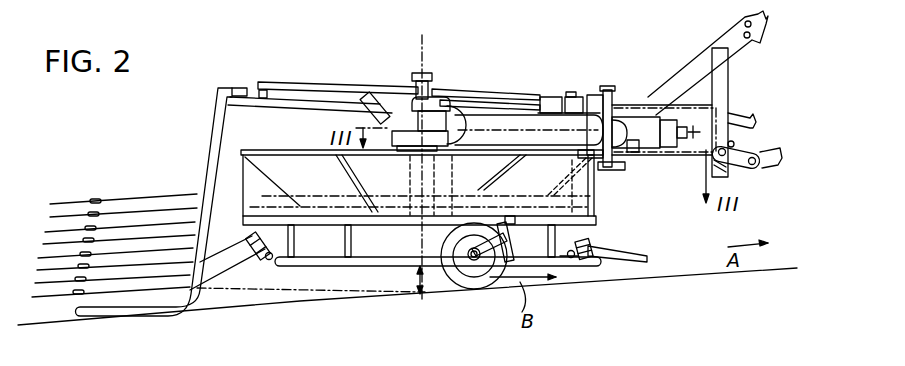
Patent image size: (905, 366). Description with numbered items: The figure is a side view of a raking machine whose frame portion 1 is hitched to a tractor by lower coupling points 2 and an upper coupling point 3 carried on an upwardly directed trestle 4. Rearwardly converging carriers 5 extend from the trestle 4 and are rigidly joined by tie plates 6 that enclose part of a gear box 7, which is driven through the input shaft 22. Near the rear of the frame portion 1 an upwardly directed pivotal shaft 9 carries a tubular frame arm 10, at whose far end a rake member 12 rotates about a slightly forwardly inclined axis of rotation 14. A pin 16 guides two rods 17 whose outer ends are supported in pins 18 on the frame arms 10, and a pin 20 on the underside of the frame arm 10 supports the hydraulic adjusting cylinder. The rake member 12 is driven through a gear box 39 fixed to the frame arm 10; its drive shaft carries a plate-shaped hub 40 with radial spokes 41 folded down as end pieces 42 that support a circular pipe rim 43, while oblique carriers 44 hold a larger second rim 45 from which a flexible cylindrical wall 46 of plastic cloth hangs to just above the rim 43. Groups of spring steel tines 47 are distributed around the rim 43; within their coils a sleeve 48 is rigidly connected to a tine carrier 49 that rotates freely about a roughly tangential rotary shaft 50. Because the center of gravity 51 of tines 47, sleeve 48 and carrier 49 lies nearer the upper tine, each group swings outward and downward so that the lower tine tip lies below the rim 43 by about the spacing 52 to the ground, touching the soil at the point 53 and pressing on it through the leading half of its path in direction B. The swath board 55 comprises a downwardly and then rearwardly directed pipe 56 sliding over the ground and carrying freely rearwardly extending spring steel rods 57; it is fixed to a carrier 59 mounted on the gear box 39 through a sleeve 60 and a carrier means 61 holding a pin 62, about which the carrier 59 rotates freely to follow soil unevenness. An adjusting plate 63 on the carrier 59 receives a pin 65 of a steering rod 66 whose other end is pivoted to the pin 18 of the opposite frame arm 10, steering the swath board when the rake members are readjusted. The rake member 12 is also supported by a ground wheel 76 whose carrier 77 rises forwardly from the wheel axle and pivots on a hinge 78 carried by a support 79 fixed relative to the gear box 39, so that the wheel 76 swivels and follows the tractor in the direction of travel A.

The frame portion 1 is at (666, 54).
The coupling points 2 is at (738, 166).
The upper coupling point 3 is at (740, 24).
The trestle 4 is at (722, 84).
The carriers 5 is at (694, 114).
The tie plates 6 is at (596, 95).
The gear box 7 is at (667, 155).
The pivotal shafts 9 is at (610, 90).
The frame arm 10 is at (500, 118).
The rake member 12 is at (588, 248).
The axis of rotation 14 is at (426, 40).
The pin 16 is at (573, 96).
The rods 17 is at (570, 92).
The pins 18 is at (543, 96).
The pin 20 is at (570, 185).
The input shaft 22 is at (689, 152).
The gear box 39 is at (404, 150).
The plate-shaped hub 40 is at (420, 206).
The spokes 41 is at (426, 203).
The end pieces 42 is at (336, 242).
The rim 43 is at (362, 268).
The carrier 44 is at (345, 167).
The second rim 45 is at (280, 154).
The flexible wall 46 is at (598, 204).
The groups of tines 47 is at (232, 275).
The sleeve 48 is at (253, 234).
The tine carrier 49 is at (261, 185).
The rotary shaft 50 is at (268, 260).
The center of gravity 51 is at (252, 250).
The spacing 52 is at (465, 292).
The point 53 is at (420, 300).
The swath board 55 is at (119, 183).
The pipe 56 is at (212, 133).
The spring steel rods 57 is at (50, 314).
The carrier 59 is at (295, 92).
The sleeve 60 is at (436, 102).
The carrier means 61 is at (383, 96).
The pin 62 is at (409, 80).
The adjusting plate 63 is at (243, 88).
The pin 65 is at (263, 102).
The steering rod 66 is at (491, 96).
The ground wheel 76 is at (488, 293).
The carrier 77 is at (503, 283).
The hinge 78 is at (517, 216).
The support 79 is at (468, 185).